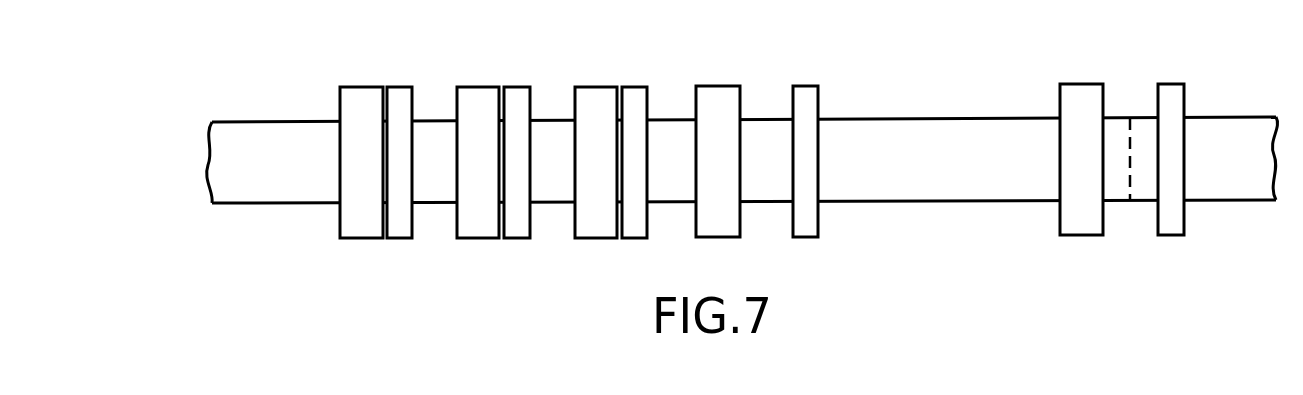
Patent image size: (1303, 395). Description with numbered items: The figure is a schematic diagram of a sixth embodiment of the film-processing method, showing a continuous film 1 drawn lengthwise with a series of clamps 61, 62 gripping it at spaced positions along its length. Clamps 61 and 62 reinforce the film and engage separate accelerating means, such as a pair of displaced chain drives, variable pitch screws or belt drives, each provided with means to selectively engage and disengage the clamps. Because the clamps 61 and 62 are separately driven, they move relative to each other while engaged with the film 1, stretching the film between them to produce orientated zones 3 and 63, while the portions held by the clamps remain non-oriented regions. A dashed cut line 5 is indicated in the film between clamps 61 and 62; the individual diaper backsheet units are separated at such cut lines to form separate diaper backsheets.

The film 1 is at (252, 115).
The orientated zone 3 is at (995, 117).
The cut line 5 is at (1128, 190).
The clamp 61 is at (352, 86).
The clamp 62 is at (398, 86).
The orientated zone 63 is at (1112, 117).